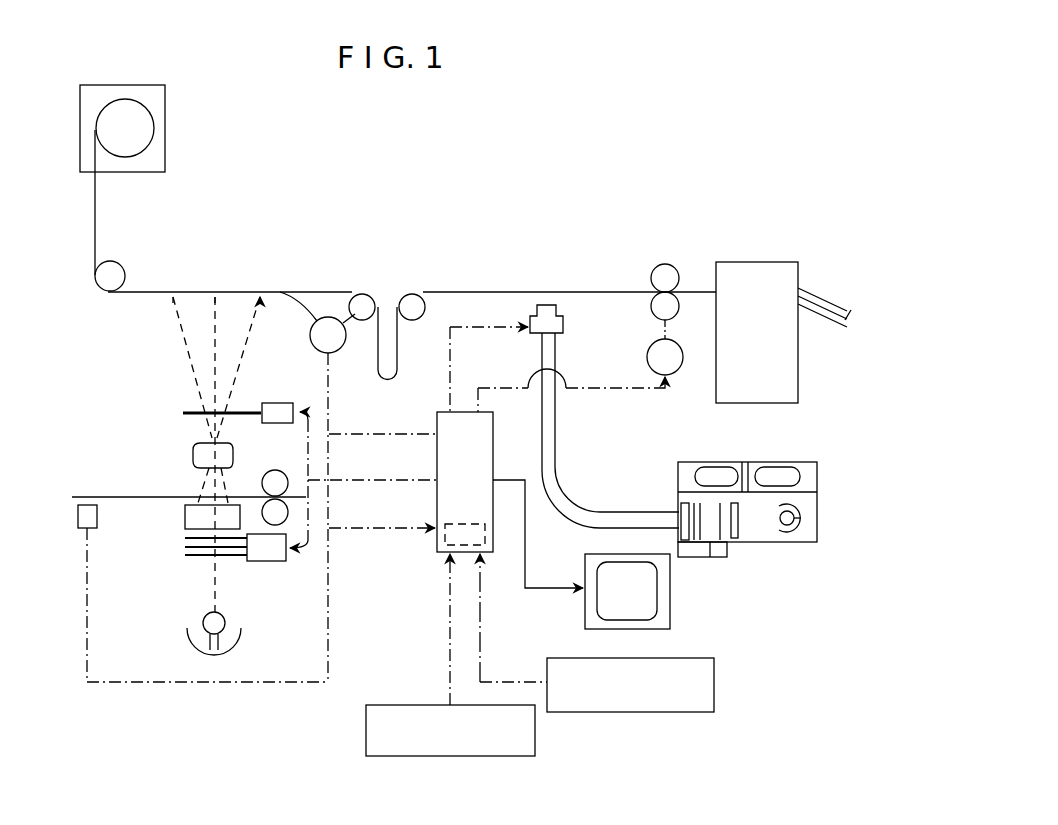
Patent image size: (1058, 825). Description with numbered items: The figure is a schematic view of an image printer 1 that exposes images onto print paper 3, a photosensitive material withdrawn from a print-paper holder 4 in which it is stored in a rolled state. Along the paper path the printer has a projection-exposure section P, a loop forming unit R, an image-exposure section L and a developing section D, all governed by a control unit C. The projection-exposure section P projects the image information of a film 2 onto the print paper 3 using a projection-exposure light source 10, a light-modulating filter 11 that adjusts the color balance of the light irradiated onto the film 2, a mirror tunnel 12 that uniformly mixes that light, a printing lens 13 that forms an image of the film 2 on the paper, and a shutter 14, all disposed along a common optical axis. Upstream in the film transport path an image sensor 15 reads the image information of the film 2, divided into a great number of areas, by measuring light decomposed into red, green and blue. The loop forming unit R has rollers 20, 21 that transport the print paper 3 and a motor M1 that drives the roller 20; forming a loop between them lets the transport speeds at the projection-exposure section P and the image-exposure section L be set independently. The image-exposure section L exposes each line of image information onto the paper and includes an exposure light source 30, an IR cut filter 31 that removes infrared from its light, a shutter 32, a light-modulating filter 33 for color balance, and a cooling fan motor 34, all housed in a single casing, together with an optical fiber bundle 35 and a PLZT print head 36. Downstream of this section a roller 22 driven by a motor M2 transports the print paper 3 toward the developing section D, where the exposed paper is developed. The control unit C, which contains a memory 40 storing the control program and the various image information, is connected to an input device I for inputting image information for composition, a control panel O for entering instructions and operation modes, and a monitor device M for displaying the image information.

The image printer 1 is at (443, 192).
The film 2 is at (100, 497).
The print paper 3 is at (95, 232).
The print-paper holder 4 is at (165, 140).
The projection-exposure light source 10 is at (202, 622).
The light-modulating filter 11 is at (233, 563).
The mirror tunnel 12 is at (187, 508).
The printing lens 13 is at (193, 452).
The shutter 14 is at (183, 412).
The image sensor 15 is at (80, 530).
The roller 20 is at (362, 296).
The roller 21 is at (414, 299).
The roller 22 is at (652, 298).
The exposure light source 30 is at (780, 534).
The IR cut filter 31 is at (740, 522).
The shutter 32 is at (717, 520).
The light-modulating filter 33 is at (676, 504).
The cooling fan motor 34 is at (785, 468).
The optical fiber bundle 35 is at (558, 460).
The PLZT print head 36 is at (565, 325).
The memory 40 is at (450, 528).
The motor M1 is at (322, 322).
The motor M2 is at (676, 366).
The loop forming unit R is at (388, 293).
The control unit C is at (453, 453).
The developing section D is at (756, 262).
The monitor device M is at (585, 617).
The image-exposure section L is at (438, 626).
The projection-exposure section P is at (160, 693).
The input device I is at (366, 727).
The control panel O is at (715, 687).